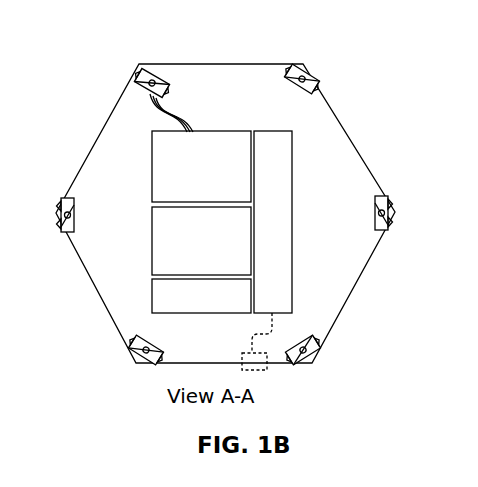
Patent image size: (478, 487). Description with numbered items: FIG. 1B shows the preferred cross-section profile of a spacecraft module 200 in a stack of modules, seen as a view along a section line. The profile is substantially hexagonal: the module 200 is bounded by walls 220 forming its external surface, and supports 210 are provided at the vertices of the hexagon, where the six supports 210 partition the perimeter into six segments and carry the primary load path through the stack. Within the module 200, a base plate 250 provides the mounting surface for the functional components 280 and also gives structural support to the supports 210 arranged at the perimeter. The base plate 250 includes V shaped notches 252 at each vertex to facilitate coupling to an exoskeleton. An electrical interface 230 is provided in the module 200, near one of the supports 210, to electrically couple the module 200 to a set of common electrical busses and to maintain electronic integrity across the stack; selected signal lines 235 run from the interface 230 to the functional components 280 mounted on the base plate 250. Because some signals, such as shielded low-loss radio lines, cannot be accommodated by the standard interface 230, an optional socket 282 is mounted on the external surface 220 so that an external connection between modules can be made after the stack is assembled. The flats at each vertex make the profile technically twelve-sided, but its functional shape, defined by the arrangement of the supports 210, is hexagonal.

The module 200 is at (395, 355).
The support 210 is at (143, 352).
The wall 220 is at (257, 62).
The electrical interface 230 is at (162, 77).
The signal lines 235 is at (177, 110).
The base plate 250 is at (125, 265).
The V shaped notch 252 is at (58, 225).
The functional components 280 is at (293, 222).
The socket 282 is at (258, 372).